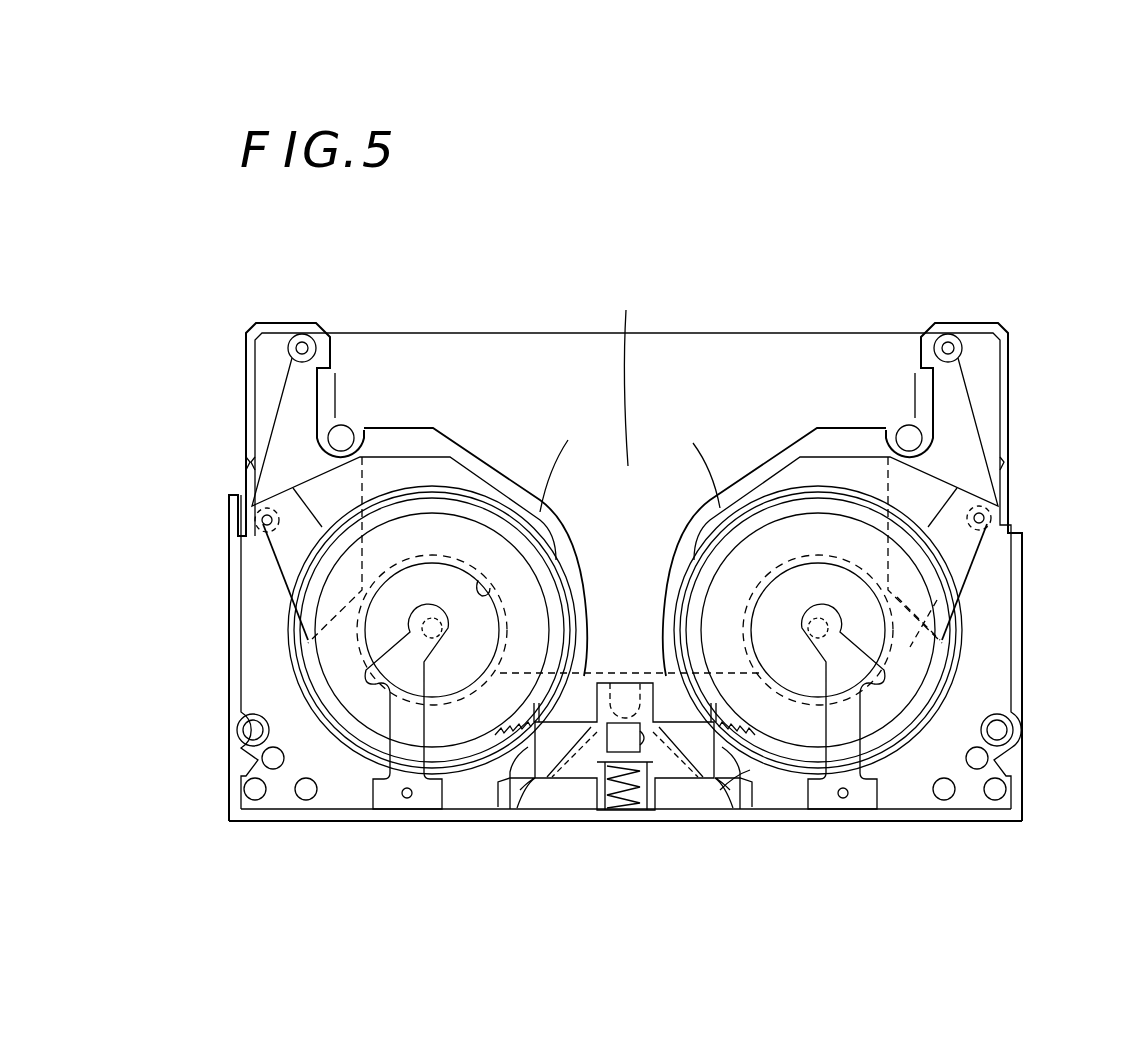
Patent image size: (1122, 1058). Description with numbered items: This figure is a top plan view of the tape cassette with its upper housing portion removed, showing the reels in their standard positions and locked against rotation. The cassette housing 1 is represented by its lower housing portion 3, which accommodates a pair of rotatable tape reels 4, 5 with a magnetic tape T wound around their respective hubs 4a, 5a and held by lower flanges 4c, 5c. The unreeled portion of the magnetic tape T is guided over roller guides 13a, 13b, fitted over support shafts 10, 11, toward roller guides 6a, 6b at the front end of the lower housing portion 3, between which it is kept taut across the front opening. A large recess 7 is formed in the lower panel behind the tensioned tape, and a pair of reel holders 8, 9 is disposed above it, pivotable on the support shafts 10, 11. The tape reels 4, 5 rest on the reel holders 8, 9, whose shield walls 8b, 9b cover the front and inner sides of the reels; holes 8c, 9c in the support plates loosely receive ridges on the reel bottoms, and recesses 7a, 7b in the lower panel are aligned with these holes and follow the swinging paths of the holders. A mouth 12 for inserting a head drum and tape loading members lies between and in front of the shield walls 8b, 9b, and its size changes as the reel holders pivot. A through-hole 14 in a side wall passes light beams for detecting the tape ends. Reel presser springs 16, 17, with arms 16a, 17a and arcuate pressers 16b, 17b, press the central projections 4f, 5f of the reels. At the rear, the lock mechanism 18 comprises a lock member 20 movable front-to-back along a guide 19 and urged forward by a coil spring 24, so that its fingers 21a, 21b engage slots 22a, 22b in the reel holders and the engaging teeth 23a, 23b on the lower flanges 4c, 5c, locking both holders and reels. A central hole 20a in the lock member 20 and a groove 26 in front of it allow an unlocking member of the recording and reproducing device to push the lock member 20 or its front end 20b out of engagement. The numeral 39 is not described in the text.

The cassette housing 1 is at (986, 832).
The lower housing portion 3 is at (267, 823).
The tape reel 4 is at (310, 662).
The hub 4a is at (350, 587).
The lower flange 4c is at (300, 678).
The central projection 4f is at (397, 652).
The tape reel 5 is at (920, 670).
The hub 5a is at (895, 585).
The lower flange 5c is at (925, 690).
The central projection 5f is at (890, 612).
The roller guide 6a is at (301, 334).
The roller guide 6b is at (947, 334).
The recess 7 is at (363, 467).
The recess 7a is at (425, 797).
The recess 7b is at (835, 805).
The reel holder 8 is at (555, 467).
The shield wall 8b is at (467, 460).
The hole 8c is at (490, 577).
The reel holder 9 is at (841, 502).
The shield wall 9b is at (780, 455).
The hole 9c is at (778, 600).
The support shaft 10 is at (257, 518).
The support shaft 11 is at (983, 517).
The mouth 12 is at (630, 380).
The roller guide 13a is at (270, 528).
The roller guide 13b is at (985, 535).
The through-hole 14 is at (245, 463).
The reel presser spring 16 is at (388, 712).
The arm 16a is at (359, 787).
The presser 16b is at (318, 647).
The reel presser spring 17 is at (865, 712).
The arm 17a is at (888, 772).
The presser 17b is at (900, 645).
The lock mechanism 18 is at (630, 838).
The guide 19 is at (603, 800).
The lock member 20 is at (565, 787).
The central hole 20a is at (693, 790).
The front end 20b is at (620, 678).
The finger 21a is at (500, 790).
The finger 21b is at (747, 803).
The slot 22a is at (543, 693).
The slot 22b is at (712, 693).
The engaging teeth 23a is at (487, 793).
The engaging teeth 23b is at (802, 810).
The coil spring 24 is at (640, 797).
The groove 26 is at (633, 678).
The screw hole 39 is at (333, 380).
The magnetic tape T is at (498, 333).